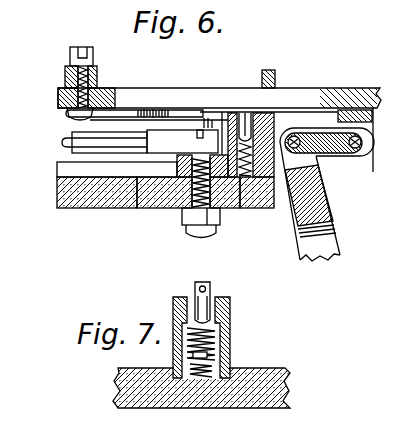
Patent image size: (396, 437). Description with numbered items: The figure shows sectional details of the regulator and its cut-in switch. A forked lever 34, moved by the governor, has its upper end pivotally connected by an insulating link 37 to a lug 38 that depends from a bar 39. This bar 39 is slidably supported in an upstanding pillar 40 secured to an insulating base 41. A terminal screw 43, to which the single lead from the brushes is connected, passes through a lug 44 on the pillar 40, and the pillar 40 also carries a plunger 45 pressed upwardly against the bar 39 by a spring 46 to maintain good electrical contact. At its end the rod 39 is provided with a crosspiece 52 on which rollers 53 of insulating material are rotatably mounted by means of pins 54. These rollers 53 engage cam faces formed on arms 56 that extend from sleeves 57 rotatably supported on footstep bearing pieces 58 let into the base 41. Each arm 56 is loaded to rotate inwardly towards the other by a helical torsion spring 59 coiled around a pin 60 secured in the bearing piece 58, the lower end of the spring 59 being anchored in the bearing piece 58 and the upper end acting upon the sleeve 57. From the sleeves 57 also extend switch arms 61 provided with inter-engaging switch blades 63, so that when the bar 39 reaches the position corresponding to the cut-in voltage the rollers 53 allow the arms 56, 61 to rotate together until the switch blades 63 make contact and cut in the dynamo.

In FIG. 6, the forked lever 34 is at (310, 259).
In FIG. 6, the insulating link 37 is at (327, 154).
In FIG. 6, the lug 38 is at (358, 154).
In FIG. 6, the bar 39 is at (312, 98).
In FIG. 6, the pillar 40 is at (276, 75).
In FIG. 6, the insulating base 41 is at (68, 210).
In FIG. 7, the insulating base 41 is at (128, 383).
In FIG. 6, the terminal screw 43 is at (218, 202).
In FIG. 6, the lug 44 is at (162, 197).
In FIG. 6, the plunger 45 is at (243, 113).
In FIG. 6, the spring 46 is at (266, 208).
In FIG. 6, the crosspiece 52 is at (93, 77).
In FIG. 6, the roller 53 is at (67, 114).
In FIG. 6, the pin 54 is at (65, 75).
In FIG. 6, the arm 56 is at (149, 110).
In FIG. 7, the sleeve 57 is at (231, 338).
In FIG. 7, the footstep bearing piece 58 is at (231, 366).
In FIG. 7, the helical torsion spring 59 is at (232, 323).
In FIG. 7, the pin 60 is at (208, 289).
In FIG. 6, the switch arm 61 is at (182, 142).
In FIG. 6, the switch blade 63 is at (87, 145).